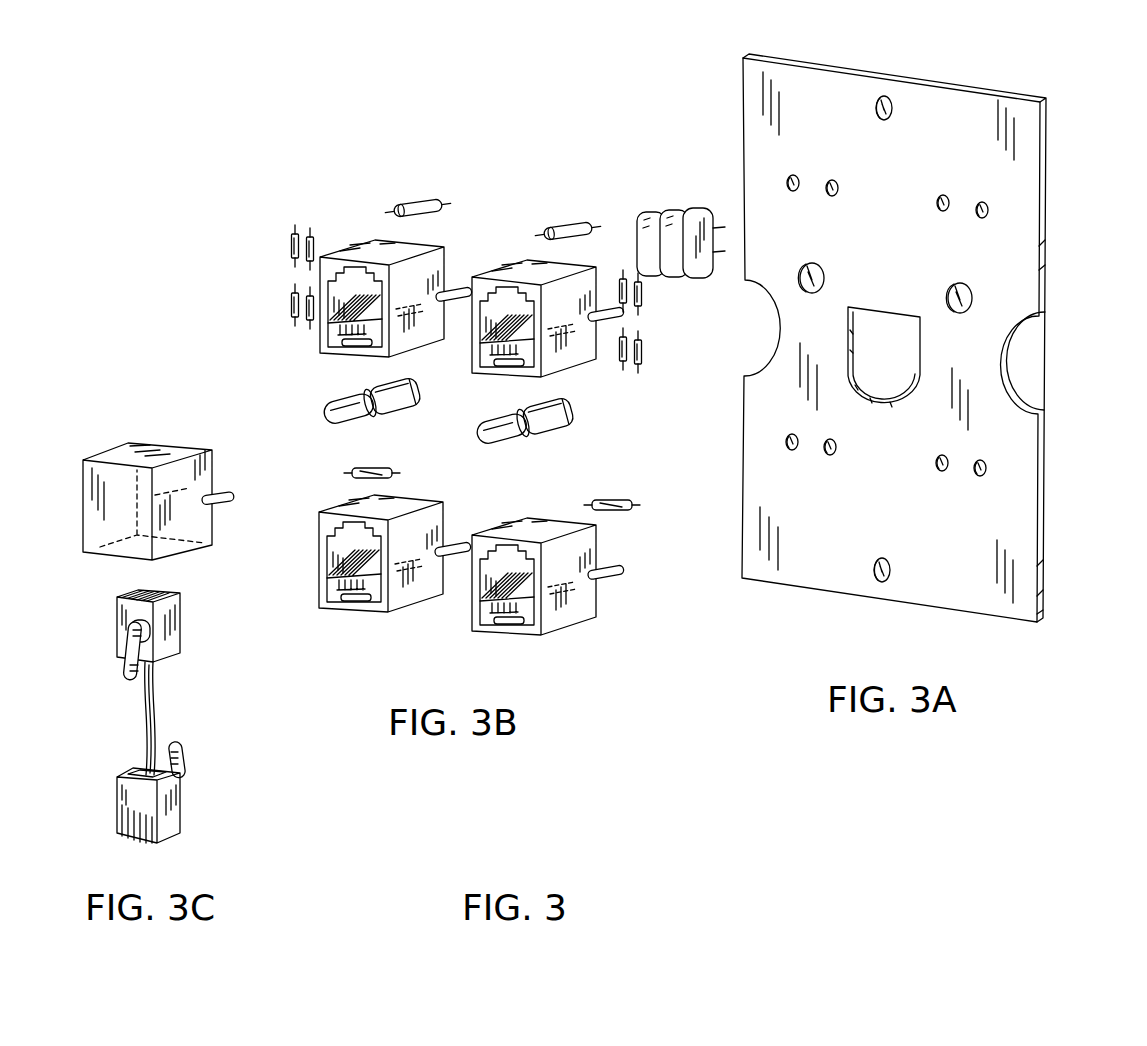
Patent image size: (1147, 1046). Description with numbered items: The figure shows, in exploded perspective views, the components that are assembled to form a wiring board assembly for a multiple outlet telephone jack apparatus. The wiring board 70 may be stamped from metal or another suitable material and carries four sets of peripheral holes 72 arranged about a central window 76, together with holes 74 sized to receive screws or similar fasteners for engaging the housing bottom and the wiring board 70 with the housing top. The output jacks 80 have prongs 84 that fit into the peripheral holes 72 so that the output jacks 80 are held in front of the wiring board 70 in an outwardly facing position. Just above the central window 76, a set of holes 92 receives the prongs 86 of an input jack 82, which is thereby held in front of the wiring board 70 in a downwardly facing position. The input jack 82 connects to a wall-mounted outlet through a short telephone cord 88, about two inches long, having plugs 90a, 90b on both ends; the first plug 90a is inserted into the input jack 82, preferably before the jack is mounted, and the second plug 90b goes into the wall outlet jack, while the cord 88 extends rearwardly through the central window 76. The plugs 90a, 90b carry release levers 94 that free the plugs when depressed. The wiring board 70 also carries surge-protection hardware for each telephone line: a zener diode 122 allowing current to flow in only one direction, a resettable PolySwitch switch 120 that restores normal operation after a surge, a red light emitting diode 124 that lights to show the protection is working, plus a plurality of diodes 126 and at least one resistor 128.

In FIG. 3A, the wiring board 70 is at (716, 88).
In FIG. 3A, the peripheral holes 72 is at (832, 181).
In FIG. 3A, the holes 74 is at (886, 97).
In FIG. 3A, the central window 76 is at (921, 358).
In FIG. 3B, the output jacks 80 is at (393, 240).
In FIG. 3, the input jack 82 is at (143, 440).
In FIG. 3B, the prongs 84 is at (462, 290).
In FIG. 3, the prongs 86 is at (225, 490).
In FIG. 3C, the telephone cord 88 is at (145, 725).
In FIG. 3C, the first plug 90a is at (120, 637).
In FIG. 3C, the second plug 90b is at (118, 805).
In FIG. 3A, the holes 92 is at (965, 286).
In FIG. 3C, the release levers 94 is at (125, 660).
In FIG. 3B, the switch 120 is at (672, 208).
In FIG. 3B, the zener diode 122 is at (556, 225).
In FIG. 3B, the light emitting diode 124 is at (348, 402).
In FIG. 3B, the diodes 126 is at (292, 235).
In FIG. 3B, the resistor 128 is at (378, 468).